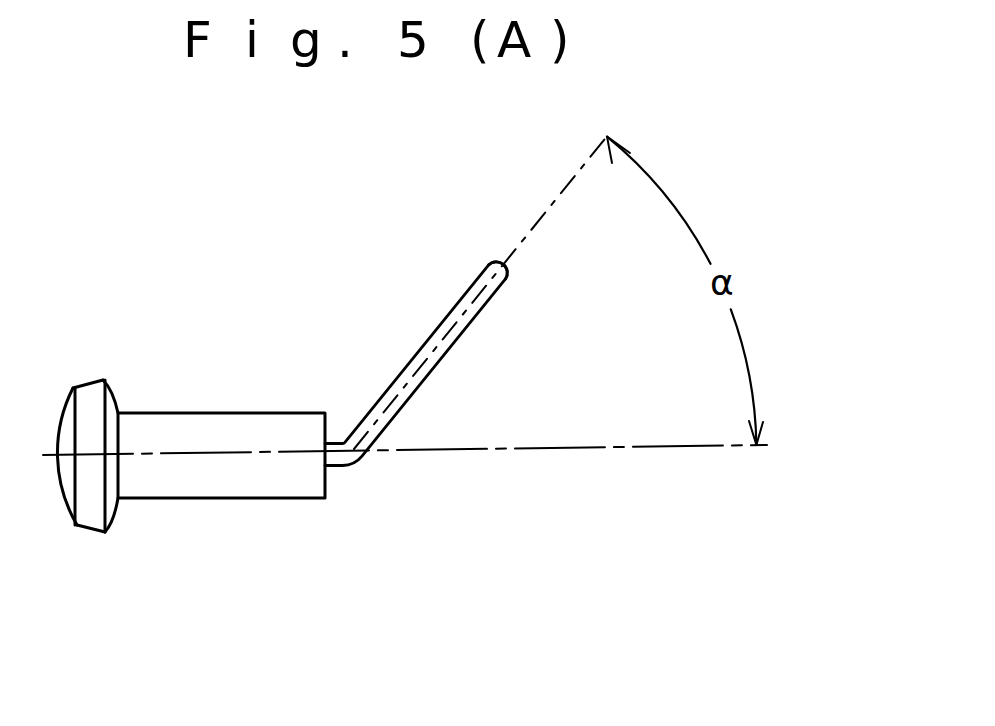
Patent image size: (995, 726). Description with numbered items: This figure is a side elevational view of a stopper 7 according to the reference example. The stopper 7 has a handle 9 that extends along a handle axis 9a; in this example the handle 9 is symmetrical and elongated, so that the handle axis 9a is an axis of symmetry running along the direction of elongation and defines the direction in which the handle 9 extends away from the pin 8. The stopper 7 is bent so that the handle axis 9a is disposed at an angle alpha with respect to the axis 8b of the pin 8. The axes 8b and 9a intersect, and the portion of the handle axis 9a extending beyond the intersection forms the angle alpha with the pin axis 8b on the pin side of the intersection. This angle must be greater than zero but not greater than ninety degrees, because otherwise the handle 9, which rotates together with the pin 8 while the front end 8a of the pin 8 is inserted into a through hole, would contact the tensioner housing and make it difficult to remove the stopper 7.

The stopper 7 is at (215, 363).
The pin 8 is at (378, 340).
The front end of the pin 8a is at (483, 275).
The axis of the pin 8b is at (553, 200).
The handle 9 is at (223, 528).
The handle axis 9a is at (525, 450).